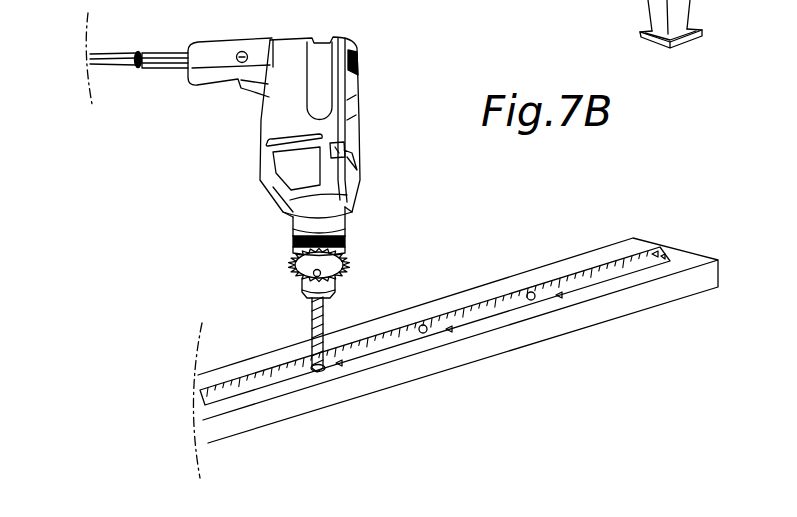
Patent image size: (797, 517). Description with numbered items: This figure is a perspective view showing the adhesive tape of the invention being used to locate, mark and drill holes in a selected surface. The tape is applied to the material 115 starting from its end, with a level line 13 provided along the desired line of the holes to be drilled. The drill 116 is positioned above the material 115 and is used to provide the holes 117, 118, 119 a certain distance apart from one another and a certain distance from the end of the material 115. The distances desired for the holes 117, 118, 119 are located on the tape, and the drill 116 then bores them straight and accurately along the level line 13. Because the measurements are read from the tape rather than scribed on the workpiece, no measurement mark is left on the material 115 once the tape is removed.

The level line 13 is at (562, 276).
The material 115 is at (618, 250).
The drill 116 is at (355, 100).
The hole 117 is at (323, 362).
The hole 118 is at (437, 330).
The hole 119 is at (547, 300).